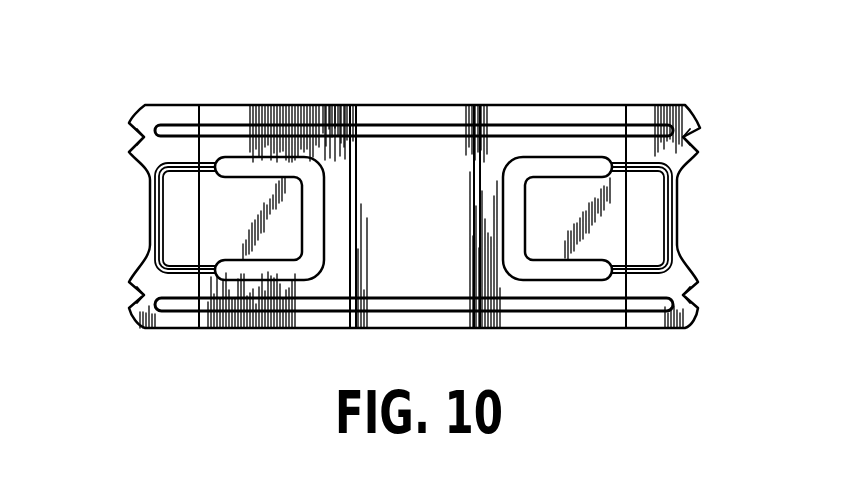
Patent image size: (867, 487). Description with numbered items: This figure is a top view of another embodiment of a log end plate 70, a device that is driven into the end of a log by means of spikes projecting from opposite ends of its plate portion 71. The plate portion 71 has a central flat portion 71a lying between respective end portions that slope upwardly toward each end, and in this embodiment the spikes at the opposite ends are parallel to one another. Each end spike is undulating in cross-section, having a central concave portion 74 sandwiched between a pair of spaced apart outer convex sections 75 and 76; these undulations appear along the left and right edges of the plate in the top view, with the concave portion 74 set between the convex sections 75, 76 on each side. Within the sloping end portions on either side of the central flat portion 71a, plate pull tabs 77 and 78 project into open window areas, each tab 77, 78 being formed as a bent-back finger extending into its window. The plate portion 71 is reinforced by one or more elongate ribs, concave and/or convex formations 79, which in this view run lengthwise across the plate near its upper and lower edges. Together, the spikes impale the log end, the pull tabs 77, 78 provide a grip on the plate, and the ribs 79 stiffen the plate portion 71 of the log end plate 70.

The log end plate 70 is at (453, 78).
The plate portion 71 is at (438, 175).
The central flat portion 71a is at (387, 160).
The central concave portion 74 is at (148, 216).
The outer convex section 75 is at (128, 138).
The outer convex section 76 is at (128, 294).
The plate pull tab 77 is at (245, 188).
The plate pull tab 78 is at (558, 202).
The elongate rib 79 is at (408, 128).